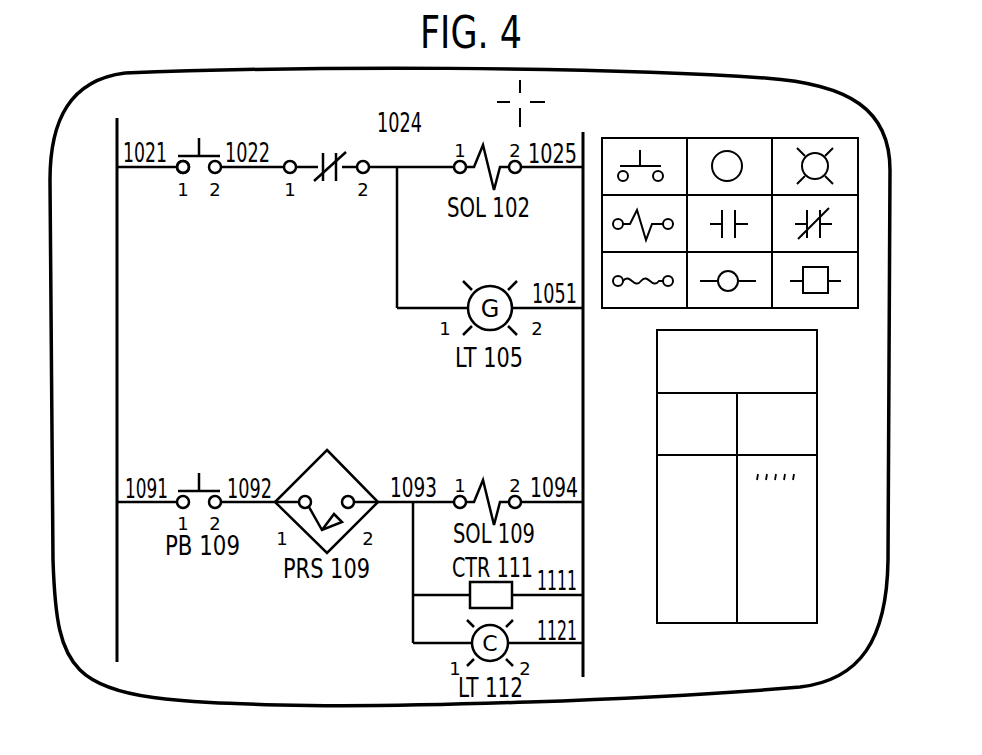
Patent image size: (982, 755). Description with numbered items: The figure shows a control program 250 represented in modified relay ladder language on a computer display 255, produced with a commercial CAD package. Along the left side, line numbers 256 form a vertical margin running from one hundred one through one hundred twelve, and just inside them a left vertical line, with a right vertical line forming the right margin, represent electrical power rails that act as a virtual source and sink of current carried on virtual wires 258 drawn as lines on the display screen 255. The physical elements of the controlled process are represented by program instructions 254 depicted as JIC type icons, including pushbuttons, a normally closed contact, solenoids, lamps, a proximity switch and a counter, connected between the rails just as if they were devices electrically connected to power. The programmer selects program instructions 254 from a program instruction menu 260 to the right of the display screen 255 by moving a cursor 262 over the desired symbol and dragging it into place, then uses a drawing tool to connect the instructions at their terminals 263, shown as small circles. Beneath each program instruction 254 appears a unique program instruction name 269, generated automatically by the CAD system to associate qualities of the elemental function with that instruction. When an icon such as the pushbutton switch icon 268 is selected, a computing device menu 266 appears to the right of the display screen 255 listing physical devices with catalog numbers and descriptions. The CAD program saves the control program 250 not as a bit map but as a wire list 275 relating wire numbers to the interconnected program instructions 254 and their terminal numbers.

The control program 250 is at (815, 83).
The program instructions 254 is at (322, 137).
The computer display 255 is at (703, 75).
The line numbers 256 is at (68, 116).
The virtual wires 258 is at (280, 158).
The program instruction menu 260 is at (722, 137).
The cursor 262 is at (509, 102).
The terminals 263 is at (178, 171).
The computing device menu 266 is at (820, 376).
The pushbutton switch icon 268 is at (647, 160).
The unique program instruction name 269 is at (291, 232).
The wire list 275 is at (708, 626).